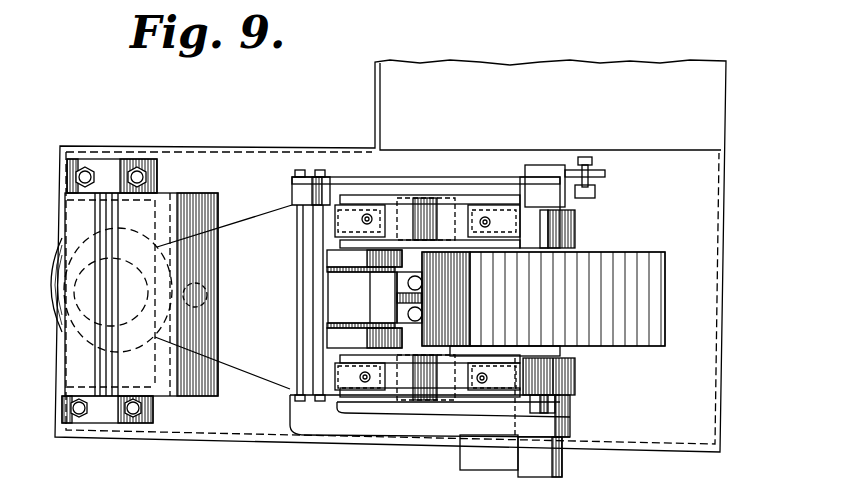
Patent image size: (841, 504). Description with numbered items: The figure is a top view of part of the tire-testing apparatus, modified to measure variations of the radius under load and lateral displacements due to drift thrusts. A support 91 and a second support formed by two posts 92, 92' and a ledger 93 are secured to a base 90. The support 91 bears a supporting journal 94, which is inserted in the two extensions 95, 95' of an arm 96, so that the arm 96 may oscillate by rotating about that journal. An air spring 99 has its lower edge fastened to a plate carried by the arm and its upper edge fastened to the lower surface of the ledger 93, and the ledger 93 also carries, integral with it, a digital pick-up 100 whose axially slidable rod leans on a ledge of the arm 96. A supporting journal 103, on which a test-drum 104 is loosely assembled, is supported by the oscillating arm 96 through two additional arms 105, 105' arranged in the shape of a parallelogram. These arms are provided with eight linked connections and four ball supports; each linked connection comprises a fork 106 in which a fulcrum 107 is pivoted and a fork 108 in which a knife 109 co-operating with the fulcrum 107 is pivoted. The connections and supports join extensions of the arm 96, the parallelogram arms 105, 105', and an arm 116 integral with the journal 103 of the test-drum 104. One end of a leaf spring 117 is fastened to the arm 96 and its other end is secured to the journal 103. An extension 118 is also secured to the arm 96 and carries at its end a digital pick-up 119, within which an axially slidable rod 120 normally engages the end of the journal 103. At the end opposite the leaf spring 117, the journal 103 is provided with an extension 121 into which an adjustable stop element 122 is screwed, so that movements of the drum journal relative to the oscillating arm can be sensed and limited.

The base 90 is at (697, 402).
The support 91 is at (345, 298).
The post 92 is at (81, 406).
The post 92' is at (80, 191).
The ledger 93 is at (72, 367).
The supporting journal 94 is at (345, 300).
The extension 95 is at (330, 342).
The extension 95' is at (332, 249).
The arm 96 is at (248, 350).
The air spring 99 is at (50, 274).
The digital pick-up 100 is at (197, 278).
The supporting journal 103 is at (560, 350).
The test-drum 104 is at (675, 300).
The additional arm 105 is at (412, 417).
The additional arm 105' is at (426, 195).
The fork 106 is at (485, 362).
The fulcrum 107 is at (515, 358).
The fork 108 is at (508, 397).
The knife 109 is at (489, 452).
The arm 116 is at (567, 373).
The leaf spring 117 is at (482, 172).
The extension 118 is at (440, 423).
The digital pick-up 119 is at (557, 463).
The rod 120 is at (550, 408).
The extension 121 is at (605, 173).
The adjustable stop element 122 is at (617, 140).